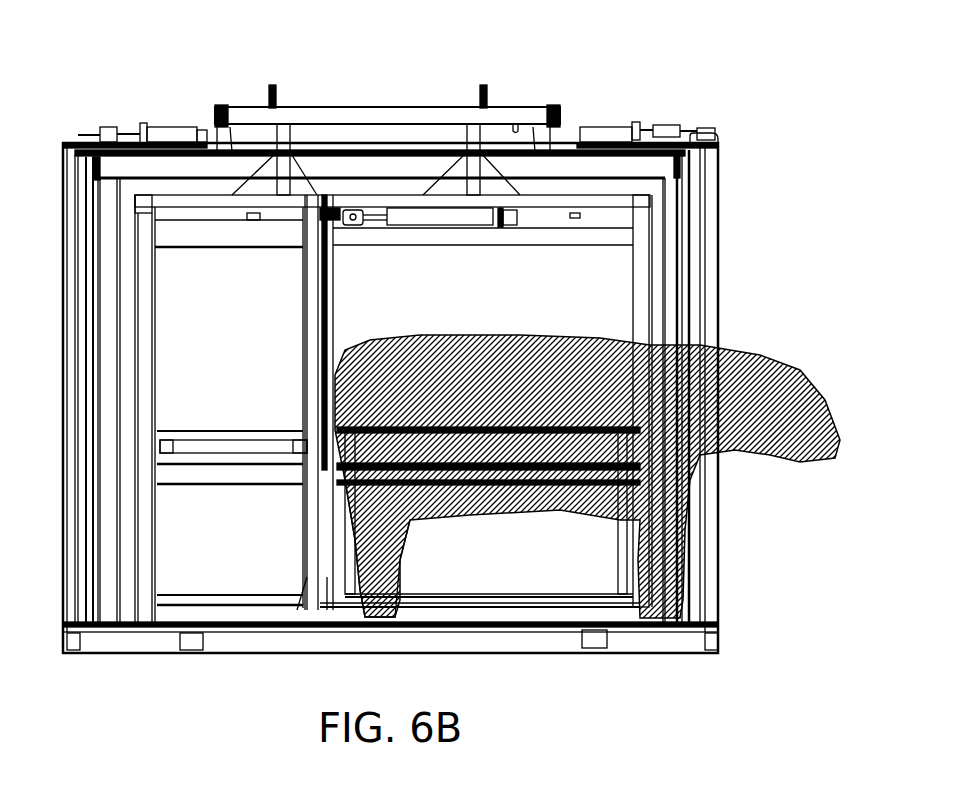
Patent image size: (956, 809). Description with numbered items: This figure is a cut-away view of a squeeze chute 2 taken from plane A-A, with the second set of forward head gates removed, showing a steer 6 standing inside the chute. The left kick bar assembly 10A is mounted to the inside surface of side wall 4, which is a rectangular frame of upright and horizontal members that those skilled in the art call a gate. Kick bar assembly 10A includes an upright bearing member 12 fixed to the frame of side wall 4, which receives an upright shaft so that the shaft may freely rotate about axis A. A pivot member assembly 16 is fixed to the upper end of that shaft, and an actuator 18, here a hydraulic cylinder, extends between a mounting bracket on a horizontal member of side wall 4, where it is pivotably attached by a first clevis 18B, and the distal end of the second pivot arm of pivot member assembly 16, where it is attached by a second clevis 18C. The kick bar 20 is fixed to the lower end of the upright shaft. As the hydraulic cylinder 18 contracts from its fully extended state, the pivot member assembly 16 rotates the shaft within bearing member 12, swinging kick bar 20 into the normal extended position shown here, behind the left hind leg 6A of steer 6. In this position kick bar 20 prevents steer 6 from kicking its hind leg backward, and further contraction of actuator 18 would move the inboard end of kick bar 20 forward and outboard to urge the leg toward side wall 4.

The squeeze chute 2 is at (545, 80).
The side wall 4 is at (633, 263).
The steer 6 is at (745, 335).
The left hind leg 6A is at (350, 500).
The left kick bar assembly 10A is at (366, 322).
The upright bearing member 12 is at (333, 283).
The pivot member assembly 16 is at (320, 208).
The actuator 18 is at (445, 228).
The first clevis 18B is at (510, 225).
The second clevis 18C is at (362, 210).
The kick bar 20 is at (297, 490).
The axis A is at (325, 53).